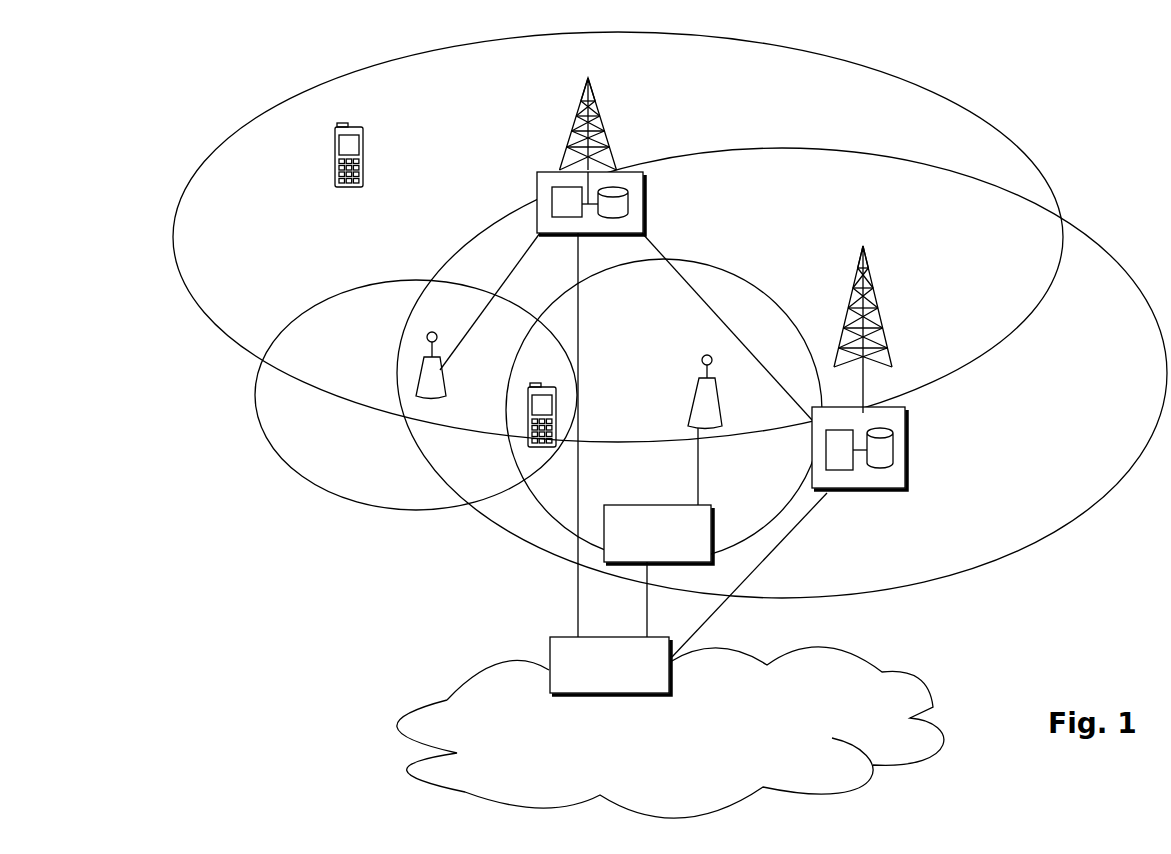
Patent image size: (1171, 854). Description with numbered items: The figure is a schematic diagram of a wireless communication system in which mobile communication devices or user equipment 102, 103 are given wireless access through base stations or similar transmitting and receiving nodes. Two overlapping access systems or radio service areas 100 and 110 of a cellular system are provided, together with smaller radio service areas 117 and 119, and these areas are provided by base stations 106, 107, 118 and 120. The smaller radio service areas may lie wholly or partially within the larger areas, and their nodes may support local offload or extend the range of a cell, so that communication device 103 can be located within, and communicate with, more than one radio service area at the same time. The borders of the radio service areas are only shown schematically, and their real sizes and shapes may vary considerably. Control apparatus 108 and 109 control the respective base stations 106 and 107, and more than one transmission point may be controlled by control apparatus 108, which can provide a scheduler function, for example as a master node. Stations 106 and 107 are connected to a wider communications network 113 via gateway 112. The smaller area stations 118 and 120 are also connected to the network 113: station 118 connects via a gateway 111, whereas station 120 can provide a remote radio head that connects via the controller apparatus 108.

The radio service area 100 is at (253, 107).
The user equipment 102 is at (335, 172).
The user equipment 103 is at (532, 432).
The base station 106 is at (570, 133).
The base station 107 is at (882, 328).
The control apparatus 108 is at (535, 186).
The control apparatus 109 is at (897, 477).
The radio service area 110 is at (1099, 521).
The gateway 111 is at (610, 540).
The gateway 112 is at (550, 637).
The communications network 113 is at (477, 705).
The radio service area 117 is at (741, 272).
The base station 118 is at (708, 412).
The radio service area 119 is at (332, 490).
The base station 120 is at (422, 370).